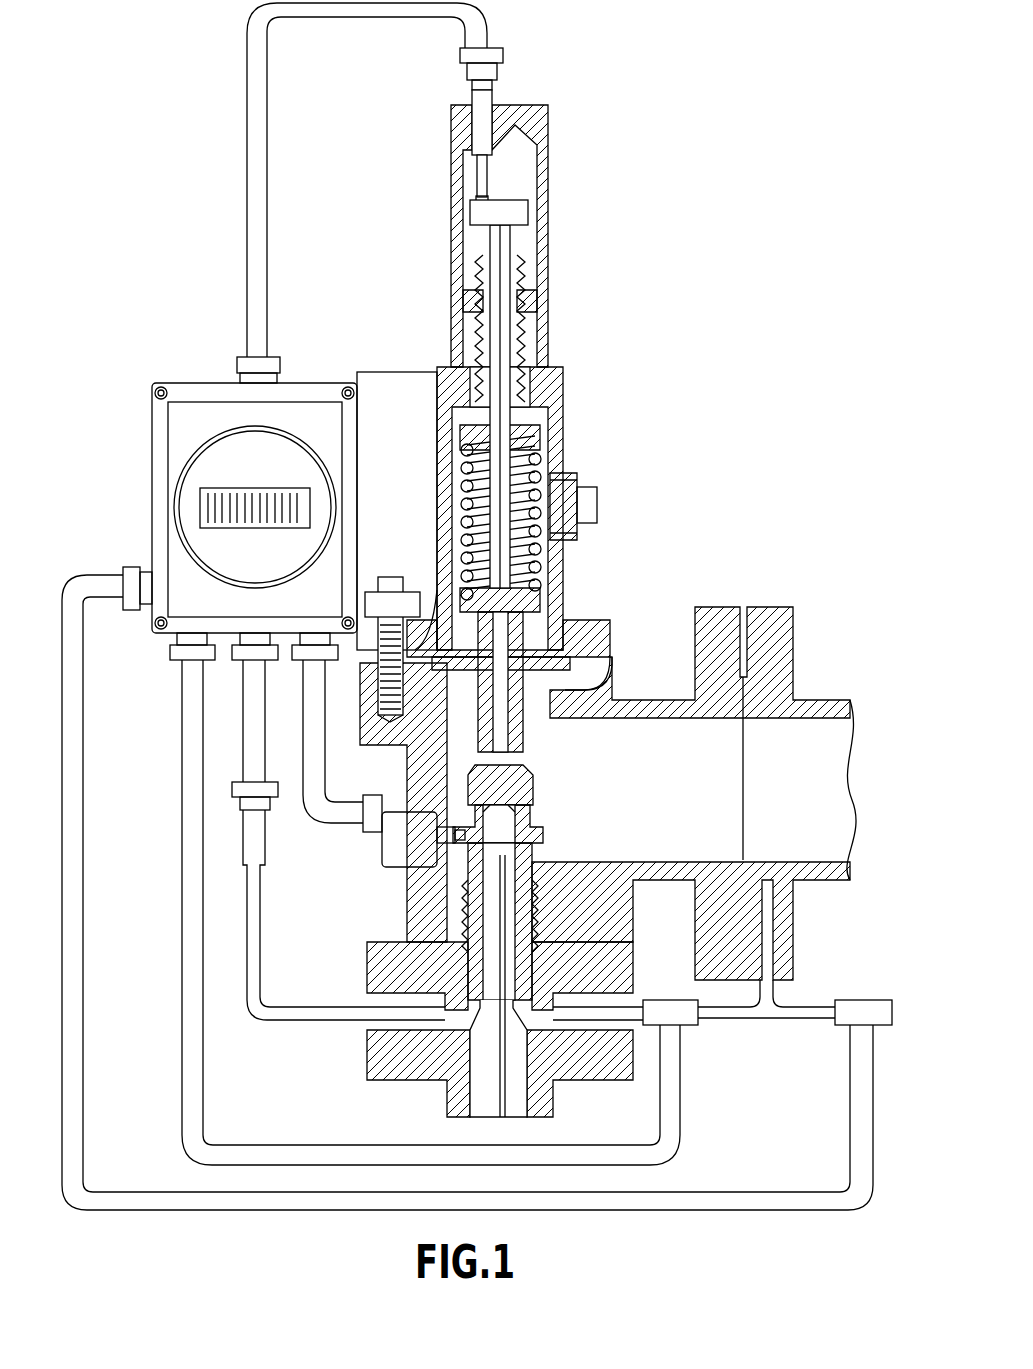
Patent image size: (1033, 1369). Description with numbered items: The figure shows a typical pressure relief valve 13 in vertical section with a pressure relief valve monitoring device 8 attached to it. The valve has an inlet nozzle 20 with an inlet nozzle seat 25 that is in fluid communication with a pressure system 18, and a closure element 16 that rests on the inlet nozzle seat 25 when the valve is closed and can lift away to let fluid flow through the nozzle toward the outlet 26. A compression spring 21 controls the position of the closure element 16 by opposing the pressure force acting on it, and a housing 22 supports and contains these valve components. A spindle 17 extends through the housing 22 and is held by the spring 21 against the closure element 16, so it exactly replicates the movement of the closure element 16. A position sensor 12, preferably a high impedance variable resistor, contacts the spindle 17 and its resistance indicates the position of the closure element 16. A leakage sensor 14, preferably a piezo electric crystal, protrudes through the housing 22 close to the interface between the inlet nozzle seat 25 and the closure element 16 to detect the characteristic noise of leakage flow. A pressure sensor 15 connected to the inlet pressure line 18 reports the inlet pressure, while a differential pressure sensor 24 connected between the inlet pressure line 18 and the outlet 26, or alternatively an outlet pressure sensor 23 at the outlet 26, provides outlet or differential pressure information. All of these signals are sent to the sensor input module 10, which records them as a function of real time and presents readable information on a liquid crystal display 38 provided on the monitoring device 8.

The pressure relief valve monitoring device 8 is at (148, 355).
The sensor input module 10 is at (146, 436).
The position sensor 12 is at (487, 100).
The pressure relief valve 13 is at (574, 590).
The leakage sensor 14 is at (362, 833).
The pressure sensor 15 is at (262, 865).
The closure element 16 is at (532, 790).
The spindle 17 is at (502, 245).
The pressure system 18 is at (485, 1118).
The inlet nozzle 20 is at (508, 868).
The compression spring 21 is at (537, 475).
The housing 22 is at (652, 682).
The outlet pressure sensor 23 is at (858, 1003).
The differential pressure sensor 24 is at (695, 1018).
The inlet nozzle seat 25 is at (545, 815).
The outlet 26 is at (803, 728).
The liquid crystal display 38 is at (197, 506).